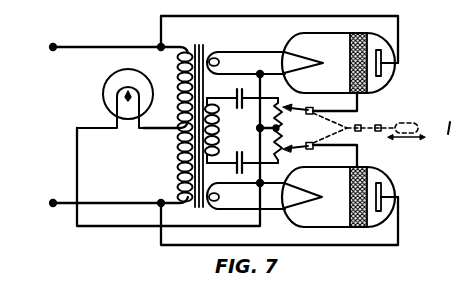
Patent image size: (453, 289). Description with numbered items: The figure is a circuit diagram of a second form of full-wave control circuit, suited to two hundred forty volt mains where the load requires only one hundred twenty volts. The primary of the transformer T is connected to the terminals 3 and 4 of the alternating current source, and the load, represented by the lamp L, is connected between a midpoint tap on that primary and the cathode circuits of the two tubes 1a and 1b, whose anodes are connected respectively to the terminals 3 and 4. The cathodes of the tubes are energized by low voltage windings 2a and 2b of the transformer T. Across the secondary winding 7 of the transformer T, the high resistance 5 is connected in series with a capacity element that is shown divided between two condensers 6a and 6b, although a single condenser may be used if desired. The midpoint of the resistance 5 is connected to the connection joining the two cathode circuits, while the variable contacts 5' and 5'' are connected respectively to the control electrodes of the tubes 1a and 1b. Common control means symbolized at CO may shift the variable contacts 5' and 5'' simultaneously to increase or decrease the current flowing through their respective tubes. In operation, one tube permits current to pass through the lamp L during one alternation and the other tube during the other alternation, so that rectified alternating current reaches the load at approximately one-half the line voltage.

The terminal 3 is at (111, 48).
The terminal 4 is at (112, 203).
The lamp L is at (100, 88).
The transformer T is at (179, 126).
The low voltage winding 2a is at (220, 62).
The low voltage winding 2b is at (220, 197).
The secondary winding 7 is at (220, 130).
The condenser 6a is at (232, 93).
The condenser 6b is at (233, 168).
The high resistance 5 is at (282, 130).
The variable contact 5' is at (320, 104).
The variable contact 5'' is at (320, 155).
The common control means CO is at (401, 124).
The mercury vapor tube 1a is at (390, 77).
The mercury vapor tube 1b is at (382, 174).